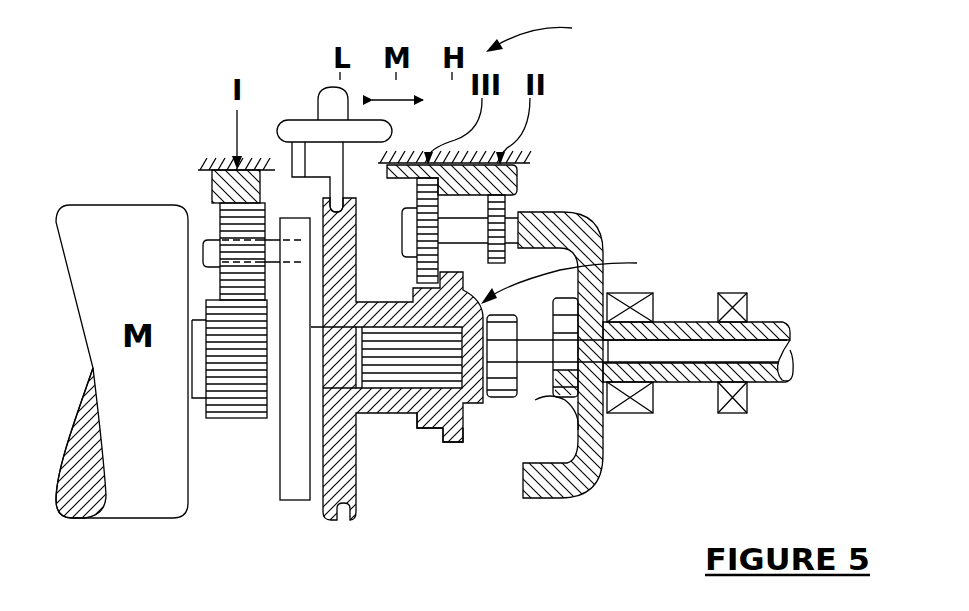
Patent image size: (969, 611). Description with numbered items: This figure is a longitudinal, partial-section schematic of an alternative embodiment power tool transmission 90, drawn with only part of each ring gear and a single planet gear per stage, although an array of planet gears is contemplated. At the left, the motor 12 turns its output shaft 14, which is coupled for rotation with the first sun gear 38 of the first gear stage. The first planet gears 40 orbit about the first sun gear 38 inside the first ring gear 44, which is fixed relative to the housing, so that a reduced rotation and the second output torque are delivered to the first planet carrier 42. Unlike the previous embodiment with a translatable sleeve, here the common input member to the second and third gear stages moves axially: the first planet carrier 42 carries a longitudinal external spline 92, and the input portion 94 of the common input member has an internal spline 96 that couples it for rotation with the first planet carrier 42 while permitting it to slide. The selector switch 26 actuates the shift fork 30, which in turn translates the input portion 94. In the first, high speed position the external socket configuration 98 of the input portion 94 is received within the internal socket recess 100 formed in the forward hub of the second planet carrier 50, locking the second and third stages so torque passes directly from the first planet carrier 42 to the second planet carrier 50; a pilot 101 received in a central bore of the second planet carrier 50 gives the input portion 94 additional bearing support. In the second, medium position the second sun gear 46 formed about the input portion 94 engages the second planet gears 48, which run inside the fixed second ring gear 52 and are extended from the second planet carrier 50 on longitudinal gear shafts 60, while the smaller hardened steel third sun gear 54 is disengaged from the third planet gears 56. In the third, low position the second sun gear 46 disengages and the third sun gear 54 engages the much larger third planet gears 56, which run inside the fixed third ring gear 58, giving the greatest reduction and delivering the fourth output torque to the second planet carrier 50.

The motor 12 is at (88, 205).
The output shaft 14 is at (200, 398).
The selector switch 26 is at (320, 98).
The shift fork 30 is at (290, 148).
The first sun gear 38 is at (232, 420).
The first planet gears 40 is at (215, 212).
The first planet carrier 42 is at (297, 502).
The first ring gear 44 is at (208, 188).
The second sun gear 46 is at (453, 444).
The second planet gears 48 is at (506, 212).
The second planet carrier 50 is at (588, 498).
The second ring gear 52 is at (520, 188).
The third sun gear 54 is at (433, 430).
The third planet gears 56 is at (405, 193).
The third ring gear 58 is at (385, 172).
The gear shafts 60 is at (517, 167).
The power tool transmission 90 is at (543, 35).
The external spline 92 is at (397, 371).
The input portion 94 is at (571, 278).
The internal spline 96 is at (407, 373).
The external socket configuration 98 is at (503, 399).
The internal socket recess 100 is at (560, 403).
The pilot 101 is at (545, 367).